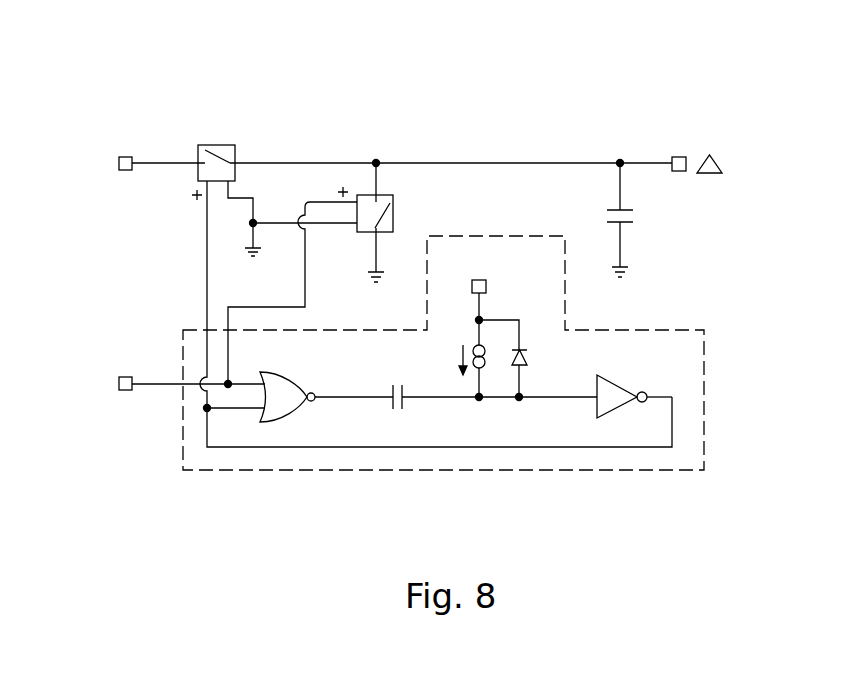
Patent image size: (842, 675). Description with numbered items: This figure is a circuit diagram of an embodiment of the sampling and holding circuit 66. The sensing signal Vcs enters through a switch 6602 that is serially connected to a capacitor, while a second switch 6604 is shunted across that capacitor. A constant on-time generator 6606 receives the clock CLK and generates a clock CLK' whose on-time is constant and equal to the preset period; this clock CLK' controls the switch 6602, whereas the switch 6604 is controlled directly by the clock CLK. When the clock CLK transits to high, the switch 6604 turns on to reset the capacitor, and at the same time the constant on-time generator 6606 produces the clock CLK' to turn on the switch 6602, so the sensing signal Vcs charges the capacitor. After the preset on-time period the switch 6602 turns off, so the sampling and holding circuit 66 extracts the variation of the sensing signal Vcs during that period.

The sampling and holding circuit 66 is at (773, 110).
The switch 6602 is at (217, 145).
The switch 6604 is at (393, 208).
The constant on-time generator 6606 is at (704, 398).